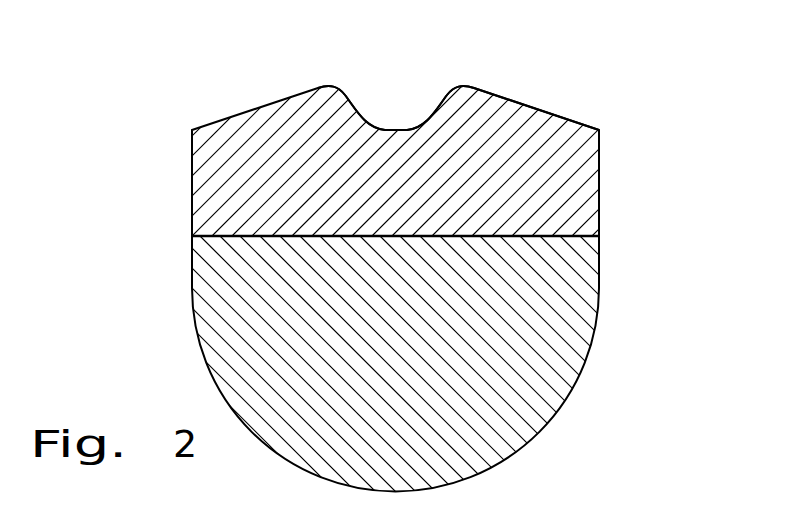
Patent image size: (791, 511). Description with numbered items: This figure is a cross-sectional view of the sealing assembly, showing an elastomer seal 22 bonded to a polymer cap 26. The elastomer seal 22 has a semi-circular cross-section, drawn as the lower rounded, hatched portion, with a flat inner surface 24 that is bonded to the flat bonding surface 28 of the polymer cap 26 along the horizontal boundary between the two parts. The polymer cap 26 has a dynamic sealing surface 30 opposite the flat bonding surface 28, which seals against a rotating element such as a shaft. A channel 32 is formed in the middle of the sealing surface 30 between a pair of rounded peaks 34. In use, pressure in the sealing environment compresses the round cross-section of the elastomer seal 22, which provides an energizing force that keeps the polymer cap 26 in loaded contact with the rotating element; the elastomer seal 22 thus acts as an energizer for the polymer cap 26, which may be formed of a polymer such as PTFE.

The elastomer seal 22 is at (546, 427).
The inner surface 24 is at (563, 236).
The polymer cap 26 is at (590, 165).
The flat bonding surface 28 is at (227, 237).
The dynamic sealing surface 30 is at (537, 108).
The channel 32 is at (433, 113).
The rounded peaks 34 is at (328, 85).